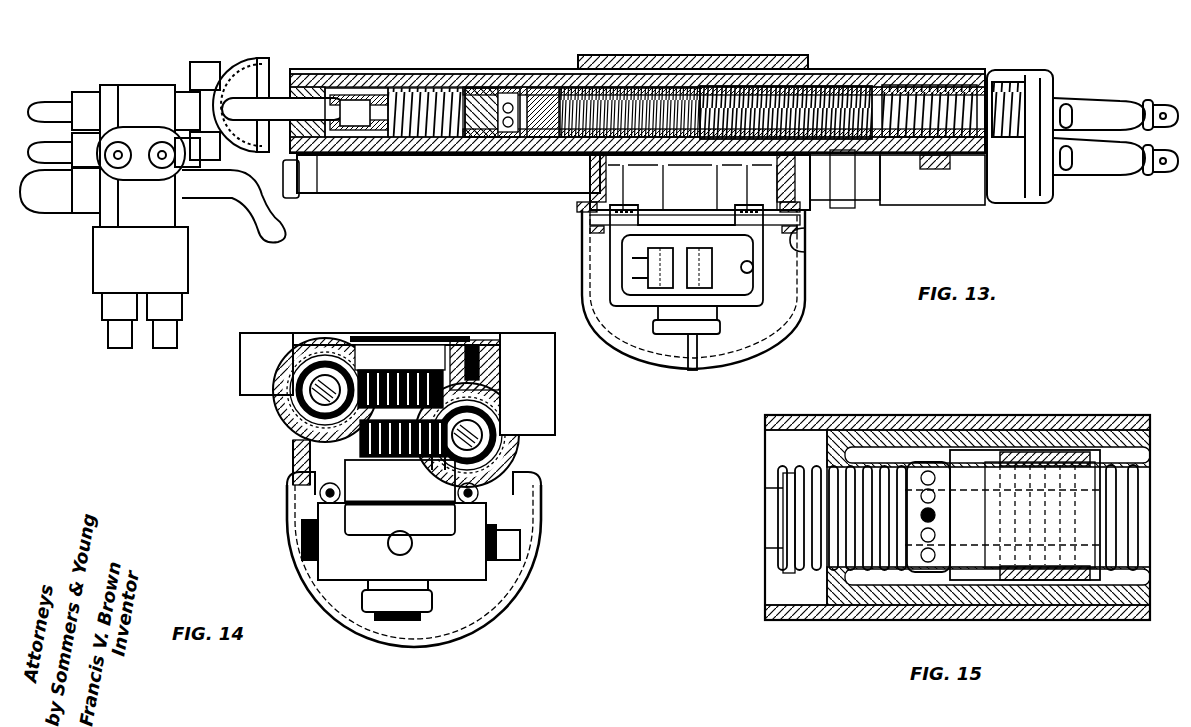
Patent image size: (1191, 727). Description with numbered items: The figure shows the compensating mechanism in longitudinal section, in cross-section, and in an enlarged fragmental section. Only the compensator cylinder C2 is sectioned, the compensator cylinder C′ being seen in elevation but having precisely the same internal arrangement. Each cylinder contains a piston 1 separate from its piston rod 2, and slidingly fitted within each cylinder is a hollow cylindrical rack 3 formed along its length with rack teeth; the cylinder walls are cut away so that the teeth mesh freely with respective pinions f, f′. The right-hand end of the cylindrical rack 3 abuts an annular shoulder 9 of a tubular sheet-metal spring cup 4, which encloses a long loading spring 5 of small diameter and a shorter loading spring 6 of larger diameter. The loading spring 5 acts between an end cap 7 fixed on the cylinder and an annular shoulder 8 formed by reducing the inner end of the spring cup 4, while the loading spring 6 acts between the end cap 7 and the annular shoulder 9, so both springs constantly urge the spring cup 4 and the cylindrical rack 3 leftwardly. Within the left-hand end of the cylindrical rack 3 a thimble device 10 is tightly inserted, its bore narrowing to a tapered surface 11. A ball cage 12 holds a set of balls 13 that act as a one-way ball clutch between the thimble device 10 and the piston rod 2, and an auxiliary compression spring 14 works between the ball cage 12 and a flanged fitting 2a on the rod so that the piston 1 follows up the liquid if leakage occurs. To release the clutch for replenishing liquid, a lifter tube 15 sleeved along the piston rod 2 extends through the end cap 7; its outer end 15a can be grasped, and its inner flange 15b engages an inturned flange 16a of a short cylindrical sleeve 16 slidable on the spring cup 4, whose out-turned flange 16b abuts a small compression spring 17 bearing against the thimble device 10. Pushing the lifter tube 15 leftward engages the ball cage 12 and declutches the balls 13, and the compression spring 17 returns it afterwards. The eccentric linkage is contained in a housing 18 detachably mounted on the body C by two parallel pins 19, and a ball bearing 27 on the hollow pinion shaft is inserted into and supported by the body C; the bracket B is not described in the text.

In FIG. 13, the piston 1 is at (328, 70).
In FIG. 13, the piston rod 2 is at (400, 92).
In FIG. 15, the piston rod 2 is at (768, 512).
In FIG. 13, the flanged fitting 2a is at (355, 90).
In FIG. 13, the cylindrical rack 3 is at (528, 88).
In FIG. 14, the cylindrical rack 3 is at (300, 400).
In FIG. 15, the cylindrical rack 3 is at (1040, 430).
In FIG. 13, the spring cup 4 is at (656, 62).
In FIG. 15, the spring cup 4 is at (1140, 460).
In FIG. 13, the loading spring 5 is at (582, 153).
In FIG. 15, the loading spring 5 is at (1140, 476).
In FIG. 13, the loading spring 6 is at (920, 95).
In FIG. 13, the end cap 7 is at (950, 78).
In FIG. 13, the annular shoulder 8 is at (545, 153).
In FIG. 15, the annular shoulder 8 is at (1110, 582).
In FIG. 13, the annular shoulder 9 is at (706, 88).
In FIG. 13, the thimble device 10 is at (447, 153).
In FIG. 15, the thimble device 10 is at (878, 430).
In FIG. 15, the tapered surface 11 is at (970, 426).
In FIG. 13, the ball cage 12 is at (498, 88).
In FIG. 15, the ball cage 12 is at (896, 592).
In FIG. 15, the balls 13 is at (944, 592).
In FIG. 13, the auxiliary compression spring 14 is at (415, 136).
In FIG. 15, the auxiliary compression spring 14 is at (785, 560).
In FIG. 13, the lifter tube 15 is at (612, 88).
In FIG. 15, the lifter tube 15 is at (1115, 512).
In FIG. 13, the end of lifter tube 15a is at (1125, 160).
In FIG. 13, the flange 15b is at (492, 153).
In FIG. 15, the flange 15b is at (1003, 440).
In FIG. 15, the cylindrical sleeve 16 is at (1052, 582).
In FIG. 15, the inturned flange 16a is at (990, 578).
In FIG. 15, the out-turned flange 16b is at (1130, 420).
In FIG. 13, the compression spring 17 is at (550, 90).
In FIG. 15, the compression spring 17 is at (1072, 450).
In FIG. 13, the housing 18 is at (760, 292).
In FIG. 14, the housing 18 is at (472, 572).
In FIG. 13, the pins 19 is at (805, 240).
In FIG. 14, the pins 19 is at (325, 500).
In FIG. 14, the ball bearing 27 is at (400, 507).
In FIG. 13, the bracket B is at (795, 322).
In FIG. 14, the bracket B is at (540, 560).
In FIG. 13, the body C is at (582, 240).
In FIG. 14, the body C is at (290, 438).
In FIG. 13, the compensator cylinder C′ is at (438, 194).
In FIG. 14, the compensator cylinder C′ is at (520, 432).
In FIG. 13, the compensator cylinder C2 is at (470, 72).
In FIG. 14, the compensator cylinder C2 is at (300, 392).
In FIG. 14, the pinion f is at (398, 370).
In FIG. 14, the pinion f′ is at (330, 452).